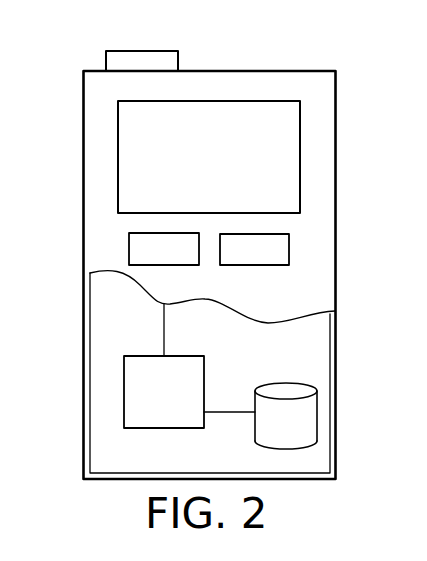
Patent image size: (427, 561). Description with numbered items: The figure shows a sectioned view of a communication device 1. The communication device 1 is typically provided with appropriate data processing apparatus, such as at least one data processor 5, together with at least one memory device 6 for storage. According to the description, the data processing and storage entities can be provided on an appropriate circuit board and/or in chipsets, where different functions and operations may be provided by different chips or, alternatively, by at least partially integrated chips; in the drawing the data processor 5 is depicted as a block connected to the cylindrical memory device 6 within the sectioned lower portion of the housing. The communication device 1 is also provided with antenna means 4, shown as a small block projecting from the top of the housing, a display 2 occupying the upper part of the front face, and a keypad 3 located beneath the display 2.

The communication device 1 is at (95, 84).
The display 2 is at (288, 114).
The keypad 3 is at (143, 250).
The antenna means 4 is at (160, 62).
The data processor 5 is at (137, 370).
The memory device 6 is at (305, 415).